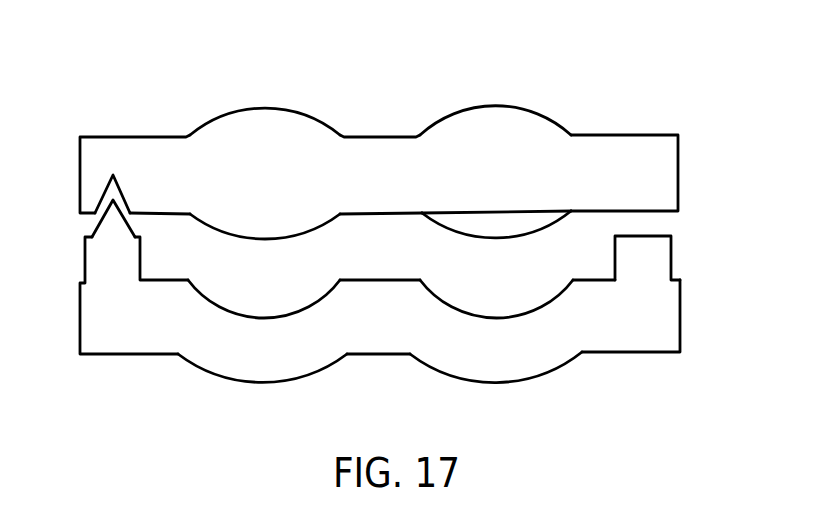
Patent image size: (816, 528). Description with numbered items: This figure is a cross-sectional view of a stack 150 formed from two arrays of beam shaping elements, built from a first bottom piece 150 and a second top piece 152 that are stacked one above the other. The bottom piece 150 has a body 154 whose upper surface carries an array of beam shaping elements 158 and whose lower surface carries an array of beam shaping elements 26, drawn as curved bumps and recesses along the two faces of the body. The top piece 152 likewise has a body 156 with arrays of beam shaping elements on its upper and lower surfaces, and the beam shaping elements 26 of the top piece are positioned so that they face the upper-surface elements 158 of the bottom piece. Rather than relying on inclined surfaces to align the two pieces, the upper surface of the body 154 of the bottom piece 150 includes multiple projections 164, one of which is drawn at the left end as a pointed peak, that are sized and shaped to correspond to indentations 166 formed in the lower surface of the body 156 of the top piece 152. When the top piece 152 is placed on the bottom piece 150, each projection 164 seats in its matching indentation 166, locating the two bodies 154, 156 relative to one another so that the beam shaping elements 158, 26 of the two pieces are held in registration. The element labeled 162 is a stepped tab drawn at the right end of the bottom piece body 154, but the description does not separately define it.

The stack of arrays of beam shaping elements / first bottom piece 150 is at (401, 322).
The second top piece 152 is at (401, 181).
The body of the bottom piece 154 is at (592, 317).
The body of the top piece 156 is at (625, 153).
The beam shaping elements 158 is at (257, 318).
The tab 162 is at (683, 250).
The projections 164 is at (92, 227).
The indentations 166 is at (118, 192).
The beam shaping elements 26 is at (267, 107).